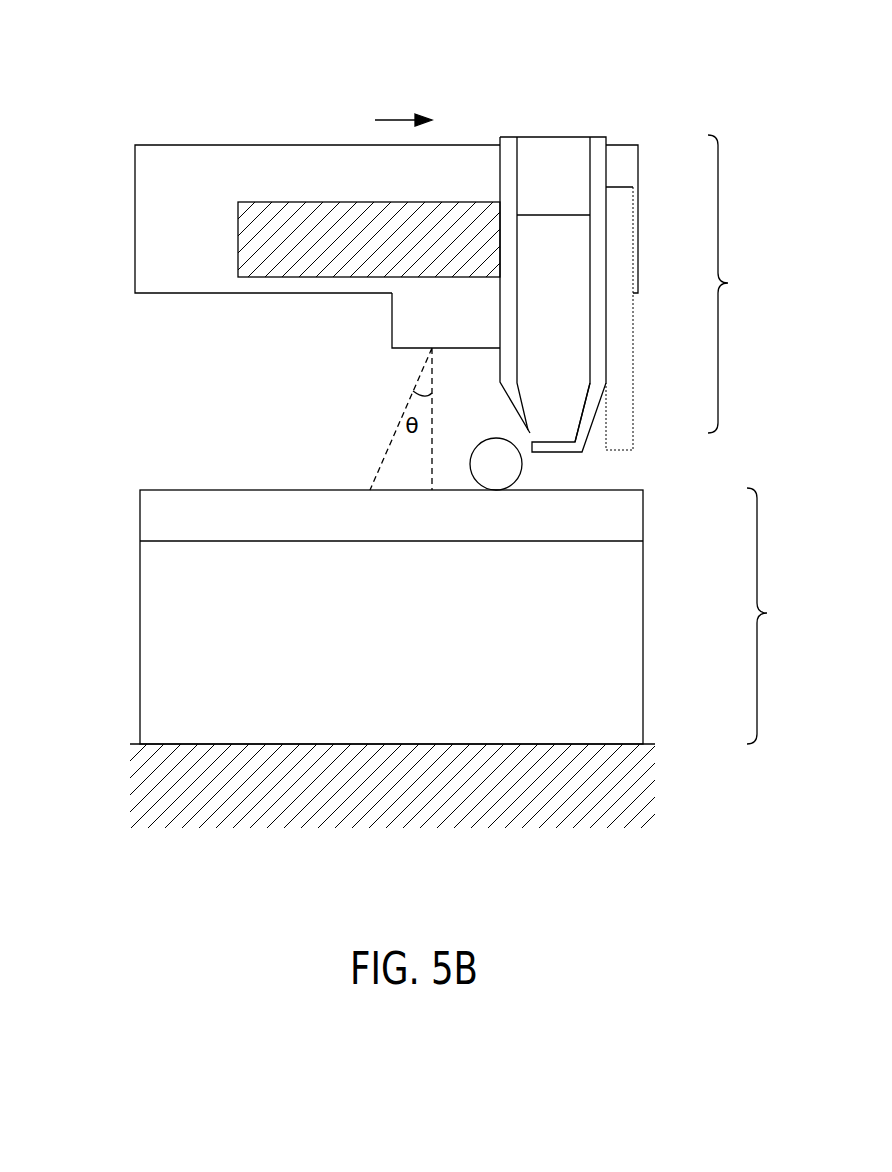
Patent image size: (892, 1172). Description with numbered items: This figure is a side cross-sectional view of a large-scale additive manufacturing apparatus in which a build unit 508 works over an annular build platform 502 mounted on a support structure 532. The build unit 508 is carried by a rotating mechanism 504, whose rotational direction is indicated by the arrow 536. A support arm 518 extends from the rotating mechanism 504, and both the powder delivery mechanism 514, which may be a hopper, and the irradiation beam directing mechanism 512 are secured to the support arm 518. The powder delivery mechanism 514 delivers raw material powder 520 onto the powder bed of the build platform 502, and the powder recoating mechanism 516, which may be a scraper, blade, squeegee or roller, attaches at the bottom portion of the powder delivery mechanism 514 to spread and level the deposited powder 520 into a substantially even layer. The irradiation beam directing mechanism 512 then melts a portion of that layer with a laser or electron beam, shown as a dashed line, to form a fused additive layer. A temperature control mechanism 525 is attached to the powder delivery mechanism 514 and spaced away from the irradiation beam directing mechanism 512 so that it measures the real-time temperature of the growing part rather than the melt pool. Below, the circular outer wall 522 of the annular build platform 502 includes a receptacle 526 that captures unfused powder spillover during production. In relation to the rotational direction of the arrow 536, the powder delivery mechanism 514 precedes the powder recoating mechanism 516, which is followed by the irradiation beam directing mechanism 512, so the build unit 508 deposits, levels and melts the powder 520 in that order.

The annular build platform 502 is at (770, 616).
The rotating mechanism 504 is at (135, 205).
The build unit 508 is at (738, 284).
The irradiation beam directing mechanism 512 is at (392, 335).
The powder delivery mechanism 514 is at (600, 135).
The powder recoating mechanism 516 is at (487, 440).
The support arm 518 is at (238, 233).
The raw material powder 520 is at (586, 350).
The circular outer wall 522 is at (633, 617).
The temperature control mechanism 525 is at (625, 407).
The receptacle 526 is at (633, 522).
The support structure 532 is at (643, 783).
The arrow 536 is at (392, 118).